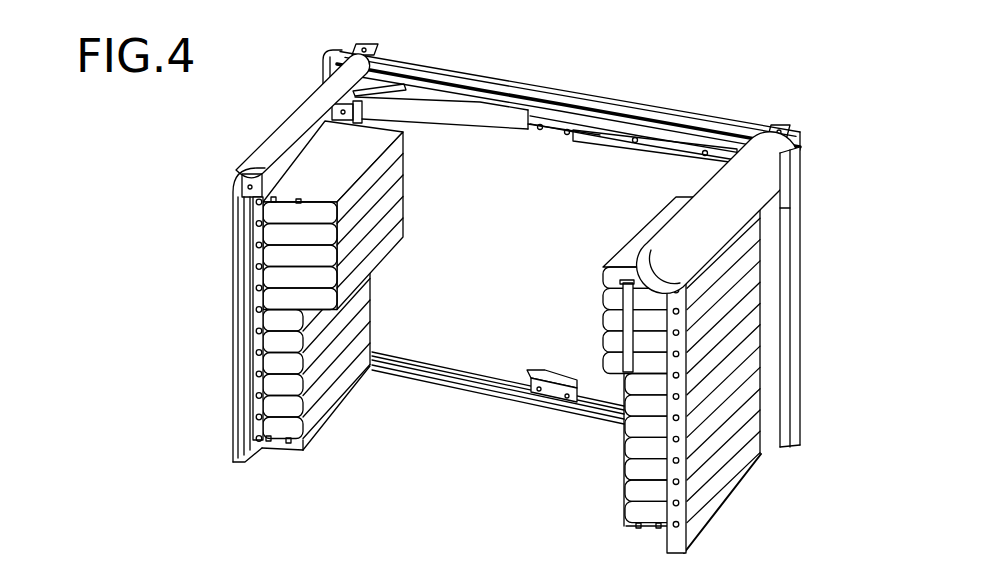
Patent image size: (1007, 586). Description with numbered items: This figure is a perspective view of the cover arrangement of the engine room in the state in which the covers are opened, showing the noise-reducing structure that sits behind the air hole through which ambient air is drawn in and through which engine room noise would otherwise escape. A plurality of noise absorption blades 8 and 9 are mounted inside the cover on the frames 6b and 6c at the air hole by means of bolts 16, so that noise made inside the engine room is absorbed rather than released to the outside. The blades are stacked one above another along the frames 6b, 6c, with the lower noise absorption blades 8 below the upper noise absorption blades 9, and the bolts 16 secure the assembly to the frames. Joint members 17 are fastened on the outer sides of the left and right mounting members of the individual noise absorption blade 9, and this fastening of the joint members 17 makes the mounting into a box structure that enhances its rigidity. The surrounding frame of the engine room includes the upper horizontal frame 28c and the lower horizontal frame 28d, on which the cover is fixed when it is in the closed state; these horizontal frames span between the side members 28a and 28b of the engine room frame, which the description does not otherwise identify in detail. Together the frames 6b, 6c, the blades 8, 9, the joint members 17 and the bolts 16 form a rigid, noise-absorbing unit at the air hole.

The upper left frame tube 28a is at (323, 66).
The upper right frame tube 28b is at (801, 176).
The upper horizontal frame 28c is at (583, 99).
The lower horizontal frame 28d is at (483, 376).
The joint member 17 is at (262, 249).
The noise absorption blade 9 is at (382, 244).
The noise absorption blade 8 is at (337, 395).
The bolt 16 is at (258, 438).
The frame 6b is at (200, 315).
The frame 6c is at (248, 400).